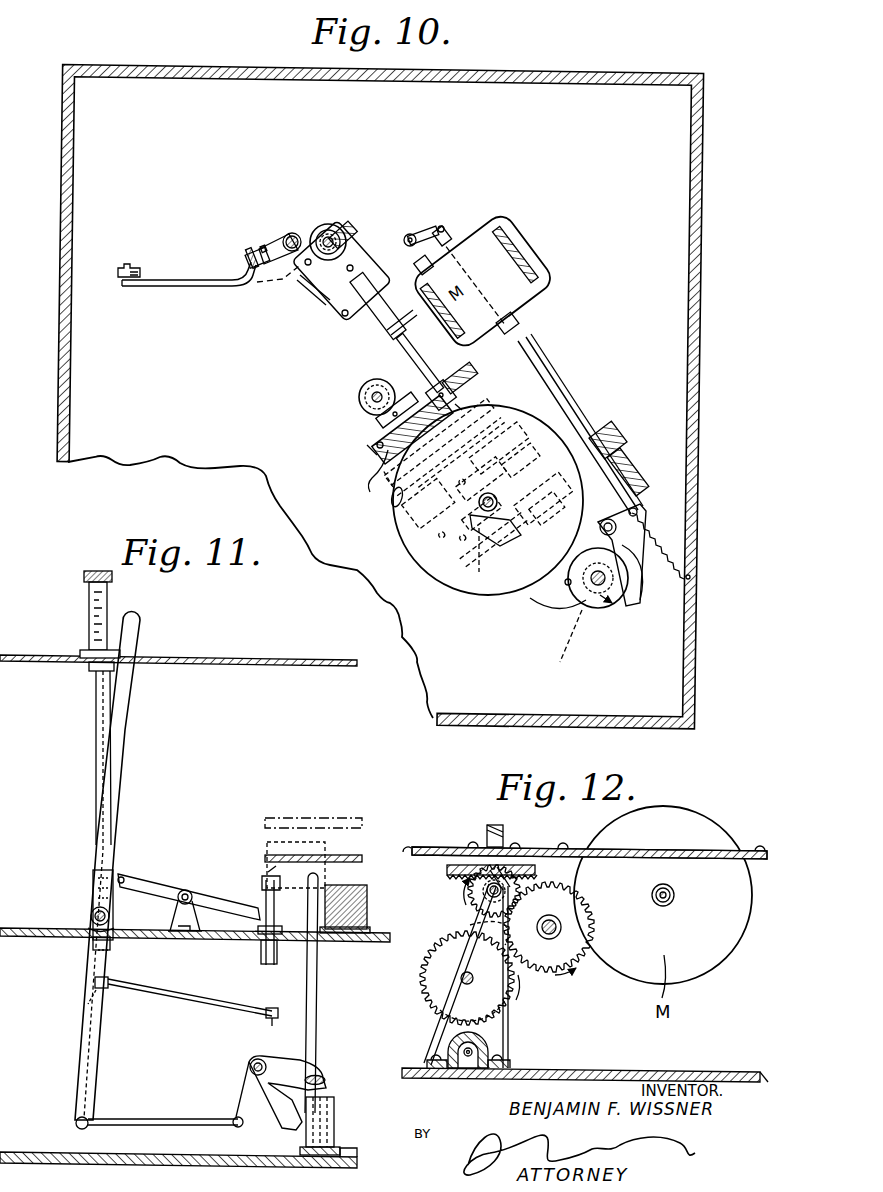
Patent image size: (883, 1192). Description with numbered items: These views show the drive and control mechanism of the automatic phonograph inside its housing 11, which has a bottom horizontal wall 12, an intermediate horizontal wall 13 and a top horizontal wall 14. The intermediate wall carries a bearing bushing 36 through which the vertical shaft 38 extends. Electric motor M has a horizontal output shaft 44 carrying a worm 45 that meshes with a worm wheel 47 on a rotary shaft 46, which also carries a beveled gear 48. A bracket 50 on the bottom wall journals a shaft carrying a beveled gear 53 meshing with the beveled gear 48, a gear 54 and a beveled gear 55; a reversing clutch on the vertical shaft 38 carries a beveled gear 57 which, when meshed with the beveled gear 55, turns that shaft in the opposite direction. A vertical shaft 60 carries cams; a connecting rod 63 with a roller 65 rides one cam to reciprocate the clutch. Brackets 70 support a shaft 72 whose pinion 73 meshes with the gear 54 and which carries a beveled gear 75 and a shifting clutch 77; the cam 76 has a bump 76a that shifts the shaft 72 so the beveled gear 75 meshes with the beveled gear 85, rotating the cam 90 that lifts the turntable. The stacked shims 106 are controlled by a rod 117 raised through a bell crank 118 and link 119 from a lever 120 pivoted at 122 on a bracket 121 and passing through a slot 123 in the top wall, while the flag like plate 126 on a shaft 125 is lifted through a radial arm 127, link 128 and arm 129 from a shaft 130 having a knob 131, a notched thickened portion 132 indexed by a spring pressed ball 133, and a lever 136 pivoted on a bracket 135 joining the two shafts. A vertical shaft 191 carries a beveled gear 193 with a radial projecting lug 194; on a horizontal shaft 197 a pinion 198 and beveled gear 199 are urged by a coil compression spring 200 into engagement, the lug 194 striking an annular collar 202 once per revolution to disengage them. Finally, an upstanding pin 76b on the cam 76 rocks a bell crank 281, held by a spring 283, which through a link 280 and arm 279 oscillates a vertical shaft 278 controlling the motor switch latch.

In FIG. 10, the housing 11 is at (335, 207).
In FIG. 10, the bottom horizontal wall 12 is at (60, 400).
In FIG. 11, the intermediate horizontal wall 13 is at (32, 940).
In FIG. 11, the top horizontal wall 14 is at (246, 655).
In FIG. 12, the bearing bushing 36 is at (468, 843).
In FIG. 10, the vertical shaft 38 is at (378, 391).
In FIG. 12, the vertical shaft 38 is at (492, 824).
In FIG. 10, the horizontal output shaft 44 is at (566, 389).
In FIG. 10, the worm 45 is at (608, 426).
In FIG. 10, the rotary shaft 46 is at (516, 464).
In FIG. 10, the worm wheel 47 is at (636, 468).
In FIG. 10, the beveled gear 48 is at (536, 552).
In FIG. 12, the bracket 50 is at (478, 1052).
In FIG. 10, the beveled gear 53 is at (475, 559).
In FIG. 10, the gear 54 is at (400, 450).
In FIG. 12, the gear 54 is at (445, 992).
In FIG. 10, the beveled gear 55 is at (386, 420).
In FIG. 10, the beveled gear 57 is at (372, 385).
In FIG. 10, the vertical shaft 60 is at (600, 590).
In FIG. 12, the connecting rod 63 is at (473, 1052).
In FIG. 10, the roller 65 is at (566, 651).
In FIG. 10, the bracket 70 is at (293, 235).
In FIG. 11, the bracket 70 is at (333, 1101).
In FIG. 10, the shaft 72 is at (545, 598).
In FIG. 12, the pinion 73 is at (545, 972).
In FIG. 10, the beveled gear 75 is at (351, 258).
In FIG. 10, the cam 76 is at (590, 612).
In FIG. 10, the bump 76a is at (600, 524).
In FIG. 10, the upstanding pin 76b is at (568, 588).
In FIG. 10, the shifting clutch 77 is at (378, 330).
In FIG. 10, the beveled gear 85 is at (325, 224).
In FIG. 11, the cam 90 is at (262, 851).
In FIG. 11, the shims 106 is at (360, 885).
In FIG. 10, the vertical shaft 117 is at (287, 236).
In FIG. 11, the vertical shaft 117 is at (317, 1030).
In FIG. 10, the bell crank 118 is at (246, 260).
In FIG. 11, the bell crank 118 is at (243, 1088).
In FIG. 10, the link 119 is at (162, 288).
In FIG. 11, the link 119 is at (156, 1116).
In FIG. 11, the lever 120 is at (130, 762).
In FIG. 11, the bracket 121 is at (91, 917).
In FIG. 11, the pivot 122 is at (94, 908).
In FIG. 11, the slot 123 is at (128, 632).
In FIG. 11, the vertical shaft 125 is at (262, 976).
In FIG. 11, the flag like plate 126 is at (268, 880).
In FIG. 11, the radial arm 127 is at (265, 1020).
In FIG. 11, the link 128 is at (190, 990).
In FIG. 11, the arm 129 is at (90, 1003).
In FIG. 11, the vertical shaft 130 is at (96, 750).
In FIG. 11, the knob 131 is at (110, 585).
In FIG. 11, the thickened portion 132 is at (89, 612).
In FIG. 11, the spring pressed ball 133 is at (96, 672).
In FIG. 11, the bracket 135 is at (188, 890).
In FIG. 11, the lever 136 is at (152, 876).
In FIG. 10, the vertical shaft 191 is at (476, 520).
In FIG. 10, the beveled gear 193 is at (426, 564).
In FIG. 12, the beveled gear 193 is at (447, 877).
In FIG. 10, the radial projecting lug 194 is at (395, 508).
In FIG. 10, the horizontal shaft 197 is at (473, 474).
In FIG. 12, the horizontal shaft 197 is at (488, 898).
In FIG. 10, the pinion 198 is at (377, 446).
In FIG. 10, the beveled gear 199 is at (461, 449).
In FIG. 12, the beveled gear 199 is at (468, 895).
In FIG. 10, the coil compression spring 200 is at (446, 375).
In FIG. 10, the annular collar 202 is at (382, 482).
In FIG. 12, the annular collar 202 is at (515, 868).
In FIG. 10, the vertical shaft 278 is at (410, 234).
In FIG. 10, the arm 279 is at (444, 226).
In FIG. 10, the link 280 is at (556, 394).
In FIG. 10, the bell crank 281 is at (634, 549).
In FIG. 10, the spring 283 is at (662, 546).